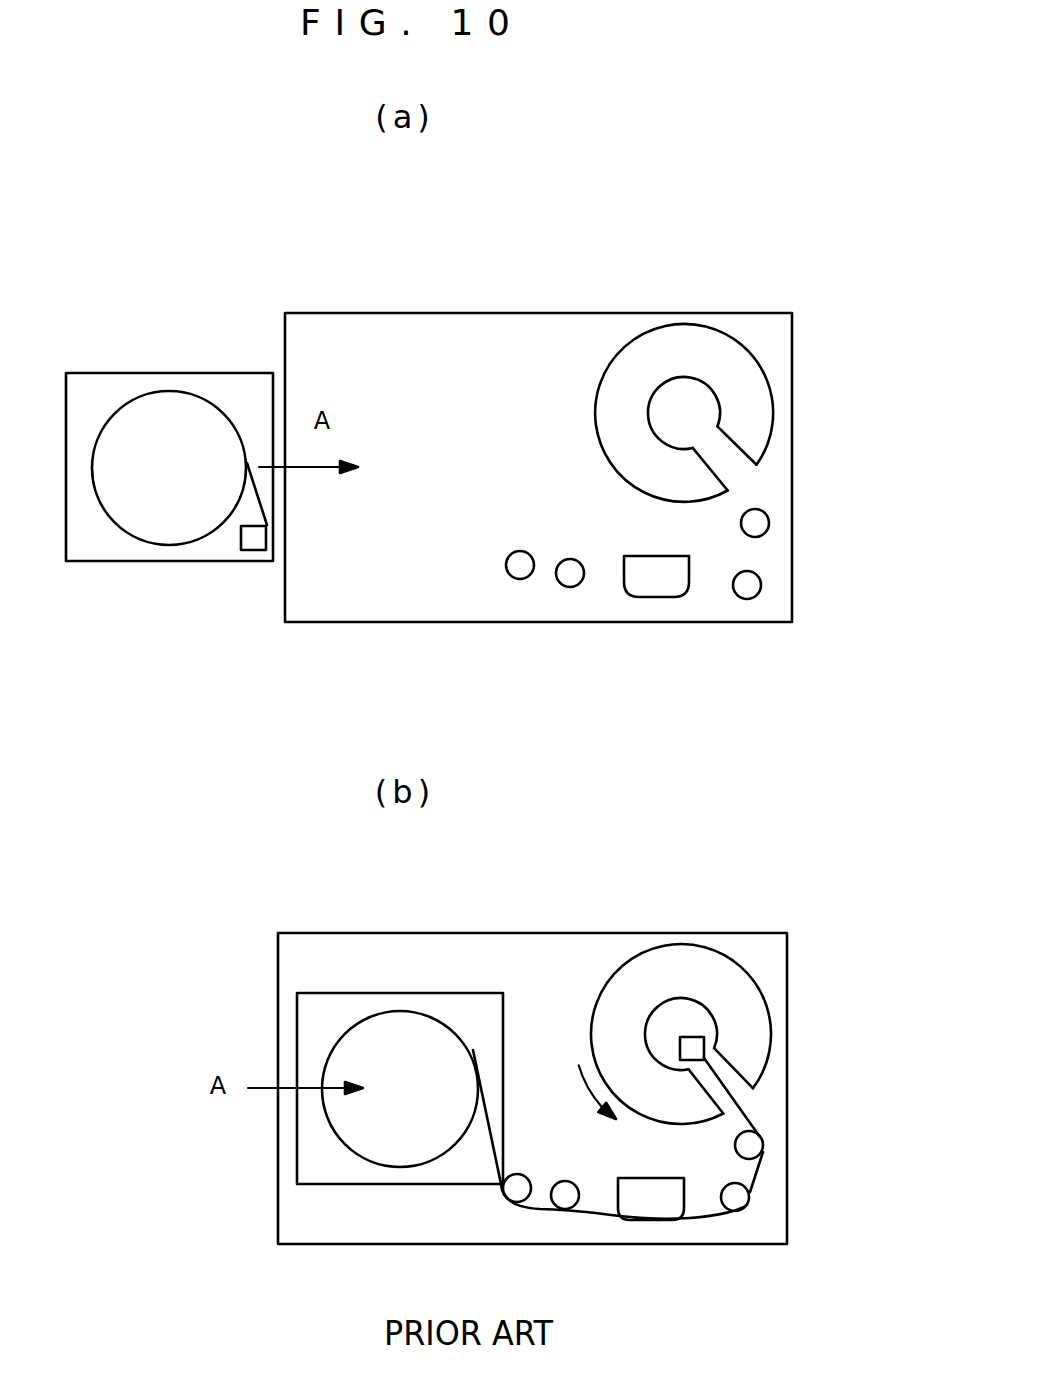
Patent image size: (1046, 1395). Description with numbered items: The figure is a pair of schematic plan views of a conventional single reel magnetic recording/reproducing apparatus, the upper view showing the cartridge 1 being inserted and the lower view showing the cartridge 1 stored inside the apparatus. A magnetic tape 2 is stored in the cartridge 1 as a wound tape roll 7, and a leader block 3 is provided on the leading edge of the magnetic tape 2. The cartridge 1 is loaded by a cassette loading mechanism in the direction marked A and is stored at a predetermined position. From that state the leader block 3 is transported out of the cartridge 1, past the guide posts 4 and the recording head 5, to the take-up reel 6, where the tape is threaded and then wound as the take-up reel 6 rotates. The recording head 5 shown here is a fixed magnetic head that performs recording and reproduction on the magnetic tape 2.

The cartridge 1 is at (100, 383).
The magnetic tape 2 is at (258, 494).
The leader block 3 is at (248, 550).
The guide post 4 is at (506, 563).
The recording head 5 is at (642, 556).
The take-up reel 6 is at (717, 330).
The tape roll 7 is at (174, 391).